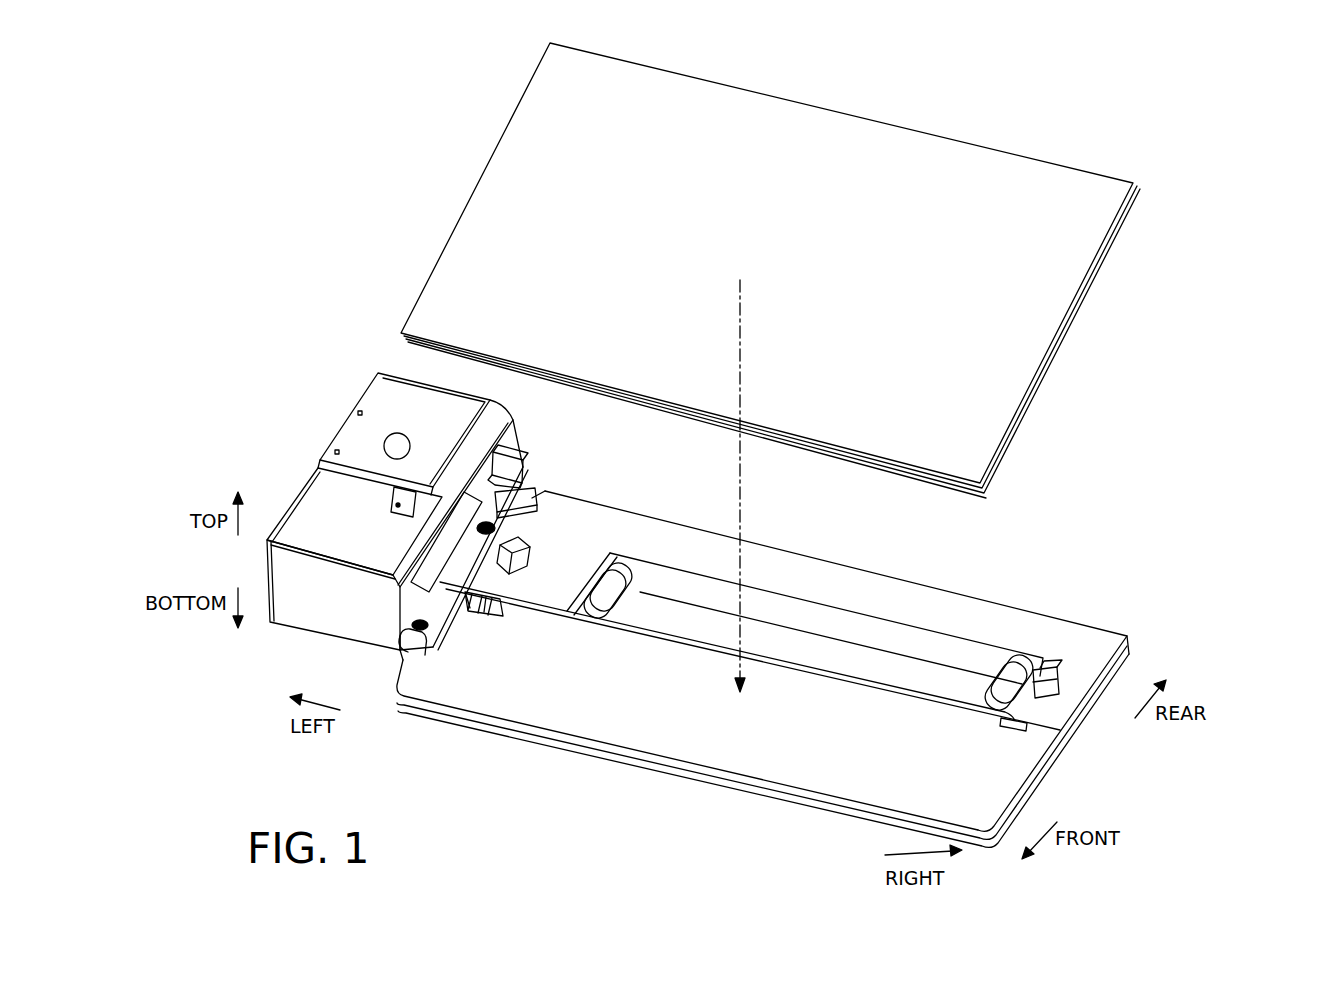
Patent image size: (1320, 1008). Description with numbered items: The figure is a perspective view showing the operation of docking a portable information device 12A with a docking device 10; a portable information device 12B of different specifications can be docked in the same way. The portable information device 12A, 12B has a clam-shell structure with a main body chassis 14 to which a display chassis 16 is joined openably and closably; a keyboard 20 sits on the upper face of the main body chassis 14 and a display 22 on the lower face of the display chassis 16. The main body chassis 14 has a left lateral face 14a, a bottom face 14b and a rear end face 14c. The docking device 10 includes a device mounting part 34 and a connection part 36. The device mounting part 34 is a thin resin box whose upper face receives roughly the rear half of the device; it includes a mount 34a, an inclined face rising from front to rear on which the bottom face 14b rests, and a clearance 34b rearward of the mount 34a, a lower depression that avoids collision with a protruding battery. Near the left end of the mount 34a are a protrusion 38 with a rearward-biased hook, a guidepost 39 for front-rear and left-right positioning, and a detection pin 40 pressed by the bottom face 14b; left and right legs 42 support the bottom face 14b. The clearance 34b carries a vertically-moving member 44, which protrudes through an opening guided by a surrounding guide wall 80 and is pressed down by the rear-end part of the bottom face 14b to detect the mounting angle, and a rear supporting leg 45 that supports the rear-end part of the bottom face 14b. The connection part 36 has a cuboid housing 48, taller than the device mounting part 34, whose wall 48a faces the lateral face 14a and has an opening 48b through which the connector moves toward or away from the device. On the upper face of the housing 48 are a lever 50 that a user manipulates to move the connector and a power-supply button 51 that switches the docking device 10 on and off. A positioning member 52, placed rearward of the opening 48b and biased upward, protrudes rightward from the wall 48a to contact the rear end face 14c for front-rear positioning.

The docking device 10 is at (666, 620).
The portable information device 12A is at (830, 270).
The portable information device 12B is at (830, 270).
The main body chassis 14 is at (807, 270).
The lateral face 14a is at (487, 162).
The bottom face 14b is at (1125, 230).
The rear end face 14c is at (1135, 184).
The display chassis 16 is at (767, 263).
The keyboard 20 is at (767, 263).
The display 22 is at (855, 132).
The device mounting part 34 is at (661, 797).
The mount 34a is at (768, 768).
The clearance 34b is at (903, 585).
The connection part 36 is at (413, 562).
The protrusion 38 is at (458, 612).
The guidepost 39 is at (462, 605).
The detection pin 40 is at (500, 607).
The legs 42 is at (1010, 728).
The vertically-moving member 44 is at (538, 496).
The rear supporting leg 45 is at (1055, 665).
The housing 48 is at (413, 539).
The wall 48a is at (403, 634).
The opening 48b is at (473, 543).
The lever 50 is at (362, 476).
The power-supply button 51 is at (397, 445).
The positioning member 52 is at (507, 463).
The guide wall 80 is at (530, 560).